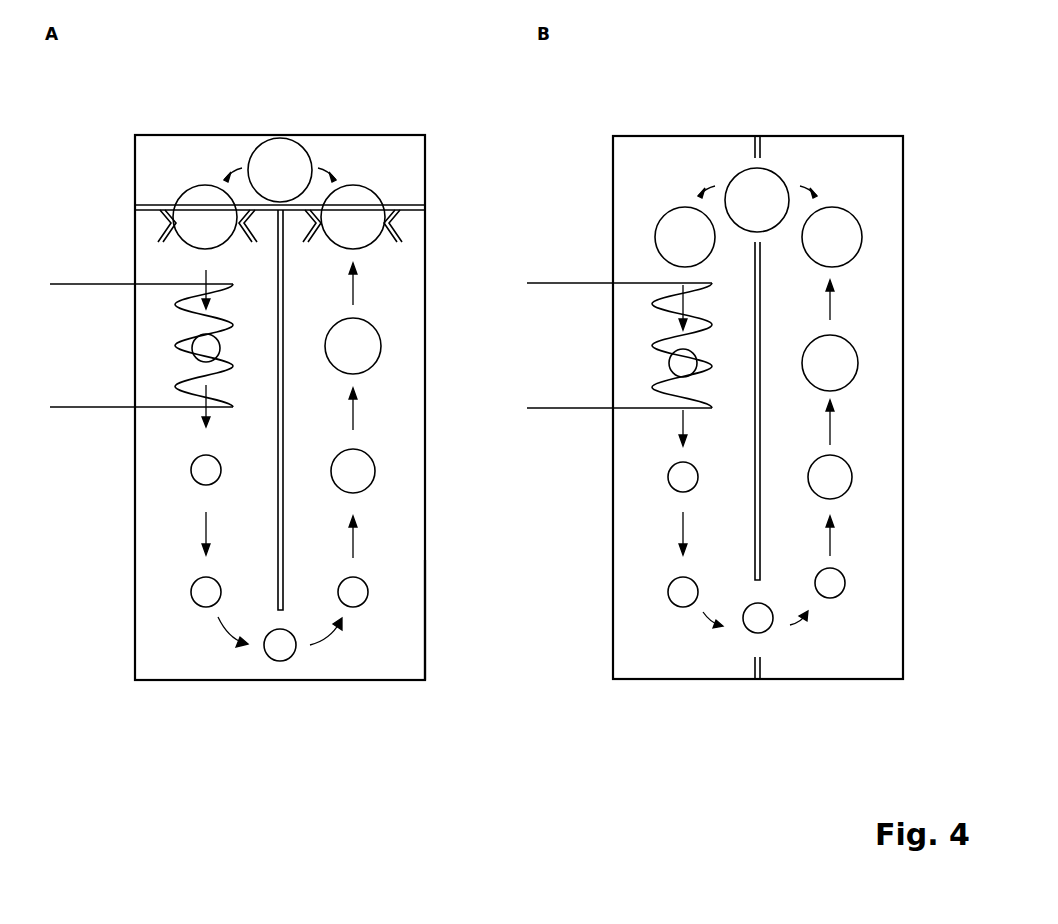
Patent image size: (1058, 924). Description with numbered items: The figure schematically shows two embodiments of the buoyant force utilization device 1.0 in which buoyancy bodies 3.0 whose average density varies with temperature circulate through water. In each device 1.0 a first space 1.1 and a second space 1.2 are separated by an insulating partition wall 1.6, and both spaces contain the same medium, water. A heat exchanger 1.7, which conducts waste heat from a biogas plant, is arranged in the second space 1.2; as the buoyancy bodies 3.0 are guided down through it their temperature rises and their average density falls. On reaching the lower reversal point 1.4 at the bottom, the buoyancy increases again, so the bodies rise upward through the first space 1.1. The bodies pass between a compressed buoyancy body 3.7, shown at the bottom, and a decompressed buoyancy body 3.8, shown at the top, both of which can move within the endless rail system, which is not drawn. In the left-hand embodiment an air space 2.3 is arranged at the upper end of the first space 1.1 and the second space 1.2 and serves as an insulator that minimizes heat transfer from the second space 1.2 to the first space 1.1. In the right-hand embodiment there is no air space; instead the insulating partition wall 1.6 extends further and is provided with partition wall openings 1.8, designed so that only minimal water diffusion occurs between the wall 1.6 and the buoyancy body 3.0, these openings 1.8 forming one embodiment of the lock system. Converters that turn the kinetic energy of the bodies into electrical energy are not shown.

The buoyant force utilization device 1.0 is at (235, 118).
The air space 2.3 is at (160, 172).
The decompressed buoyancy body 3.8 is at (282, 172).
The heat exchanger 1.7 is at (175, 322).
The insulating partition wall 1.6 is at (278, 457).
The buoyancy body 3.0 is at (358, 476).
The first space 1.1 is at (400, 607).
The second space 1.2 is at (158, 630).
The lower reversal point 1.4 is at (250, 658).
The compressed buoyancy body 3.7 is at (280, 650).
The partition wall opening 1.8 is at (757, 232).